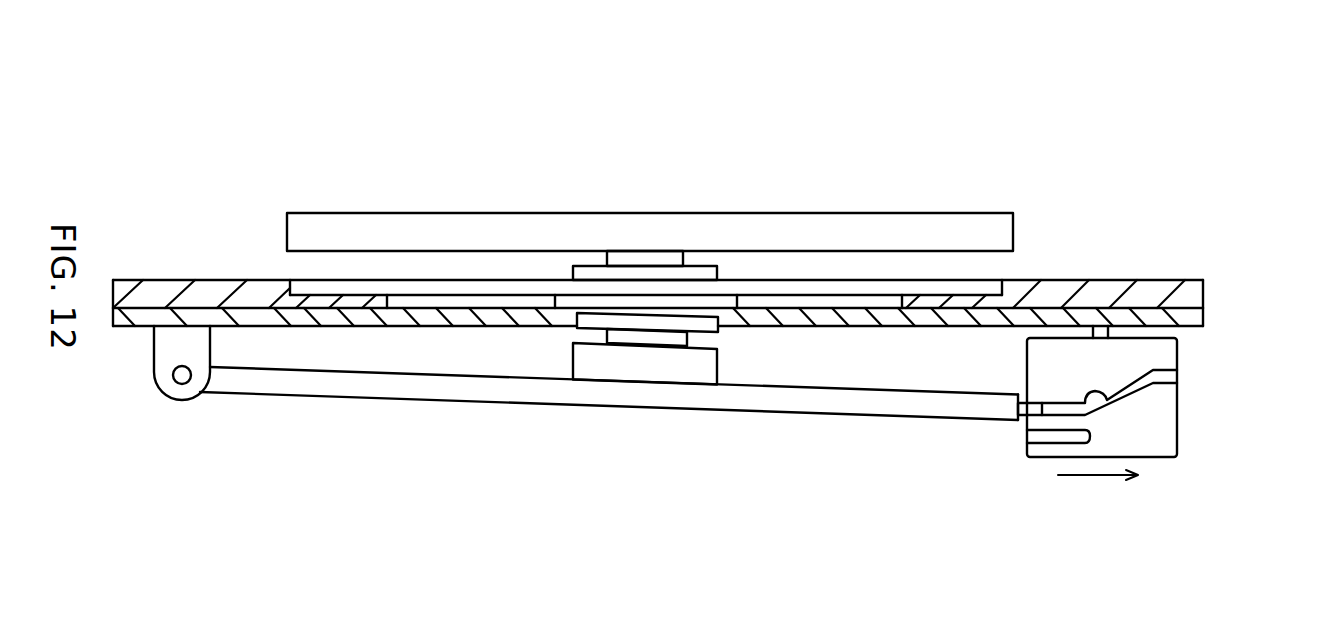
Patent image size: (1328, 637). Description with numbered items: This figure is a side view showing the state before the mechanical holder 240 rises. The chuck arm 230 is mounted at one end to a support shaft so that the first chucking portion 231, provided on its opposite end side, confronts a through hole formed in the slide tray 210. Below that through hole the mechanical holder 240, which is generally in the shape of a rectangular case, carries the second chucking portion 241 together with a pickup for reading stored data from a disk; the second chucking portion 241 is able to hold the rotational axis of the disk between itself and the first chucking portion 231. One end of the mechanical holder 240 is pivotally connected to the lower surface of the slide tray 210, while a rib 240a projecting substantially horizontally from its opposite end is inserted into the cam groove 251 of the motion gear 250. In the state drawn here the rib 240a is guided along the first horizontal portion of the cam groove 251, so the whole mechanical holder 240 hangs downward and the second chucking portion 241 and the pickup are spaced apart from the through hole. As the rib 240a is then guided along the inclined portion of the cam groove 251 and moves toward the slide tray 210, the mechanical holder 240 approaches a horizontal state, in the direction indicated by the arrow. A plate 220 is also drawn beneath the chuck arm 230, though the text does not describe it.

The slide tray 210 is at (1153, 280).
The upper plate 220 is at (1103, 279).
The chuck arm 230 is at (842, 213).
The first chucking portion 231 is at (585, 266).
The second chucking portion 241 is at (655, 317).
The mechanical holder 240 is at (430, 402).
The rib 240a is at (1043, 407).
The motion gear 250 is at (1177, 402).
The cam groove 251 is at (1100, 398).